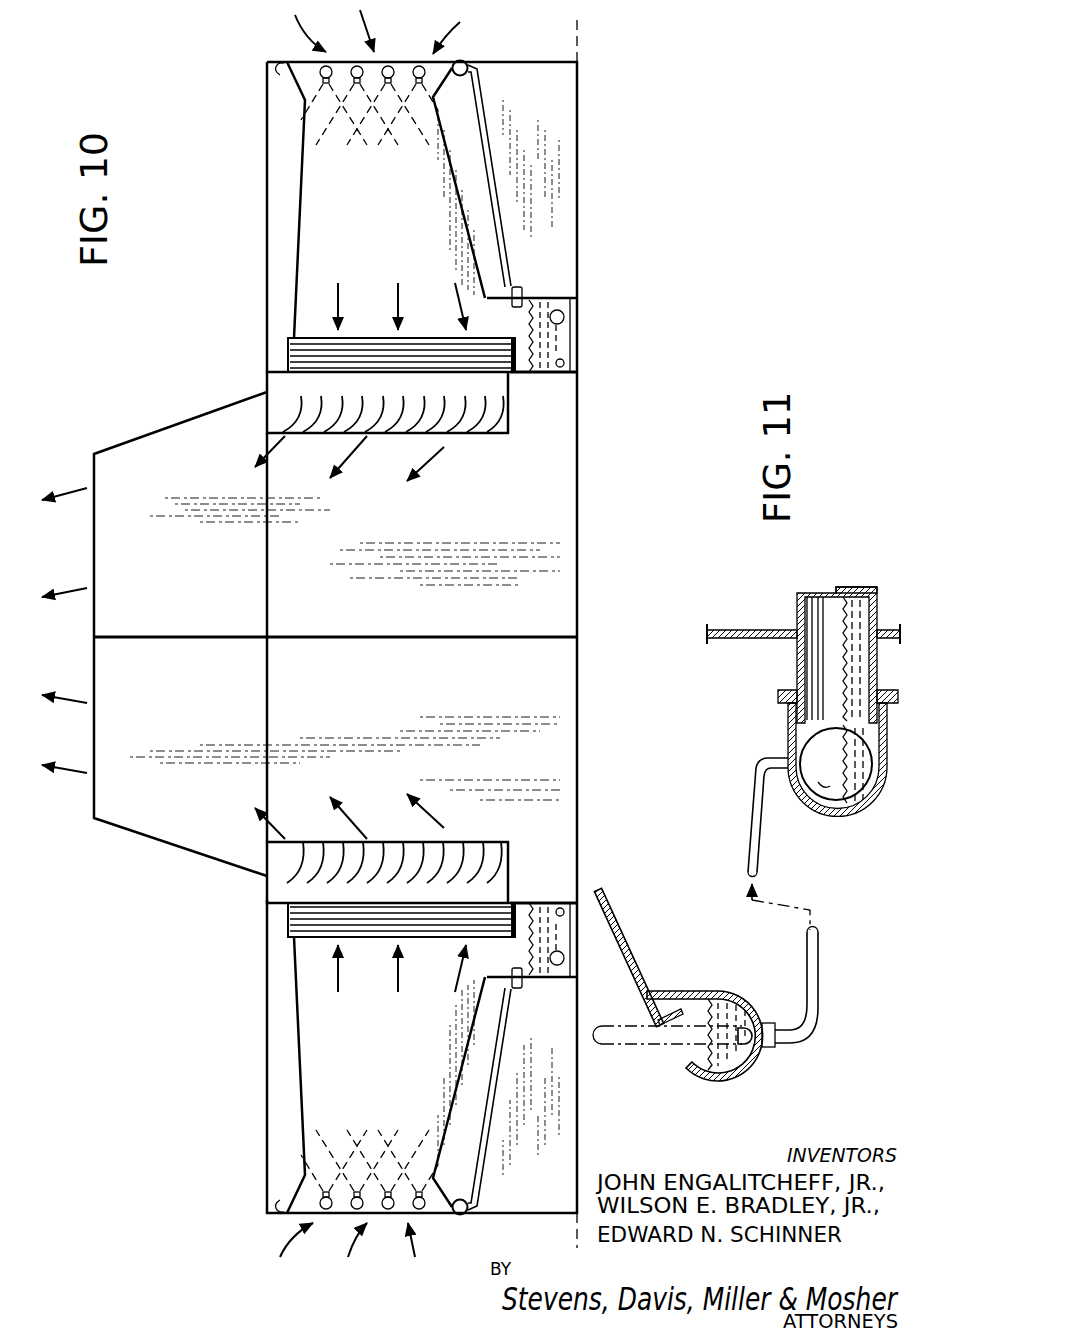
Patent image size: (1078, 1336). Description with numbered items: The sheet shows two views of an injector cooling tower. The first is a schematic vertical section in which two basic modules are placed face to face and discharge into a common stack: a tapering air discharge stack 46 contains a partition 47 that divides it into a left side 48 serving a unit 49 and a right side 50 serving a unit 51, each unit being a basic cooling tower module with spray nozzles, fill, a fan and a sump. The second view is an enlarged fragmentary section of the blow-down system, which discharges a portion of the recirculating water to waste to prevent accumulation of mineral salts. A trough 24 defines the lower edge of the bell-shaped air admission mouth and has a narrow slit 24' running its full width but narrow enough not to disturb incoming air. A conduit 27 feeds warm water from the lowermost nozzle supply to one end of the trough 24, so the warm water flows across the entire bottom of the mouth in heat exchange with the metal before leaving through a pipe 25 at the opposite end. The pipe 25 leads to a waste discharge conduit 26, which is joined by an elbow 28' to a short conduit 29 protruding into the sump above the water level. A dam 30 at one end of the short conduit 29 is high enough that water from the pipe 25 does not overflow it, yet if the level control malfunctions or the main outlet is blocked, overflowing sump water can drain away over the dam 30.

In FIG. 11, the trough 24 is at (678, 1016).
In FIG. 11, the slit 24' is at (733, 1024).
In FIG. 11, the pipe 25 is at (752, 818).
In FIG. 11, the waste discharge conduit 26 is at (822, 787).
In FIG. 11, the conduit 27 is at (620, 1040).
In FIG. 11, the elbow 28' is at (837, 795).
In FIG. 11, the short conduit 29 is at (796, 617).
In FIG. 11, the dam 30 is at (848, 586).
In FIG. 10, the air discharge stack 46 is at (113, 672).
In FIG. 10, the partition 47 is at (158, 638).
In FIG. 10, the left side 48 is at (341, 716).
In FIG. 10, the unit 49 is at (298, 1053).
In FIG. 10, the right side 50 is at (341, 524).
In FIG. 10, the unit 51 is at (298, 240).